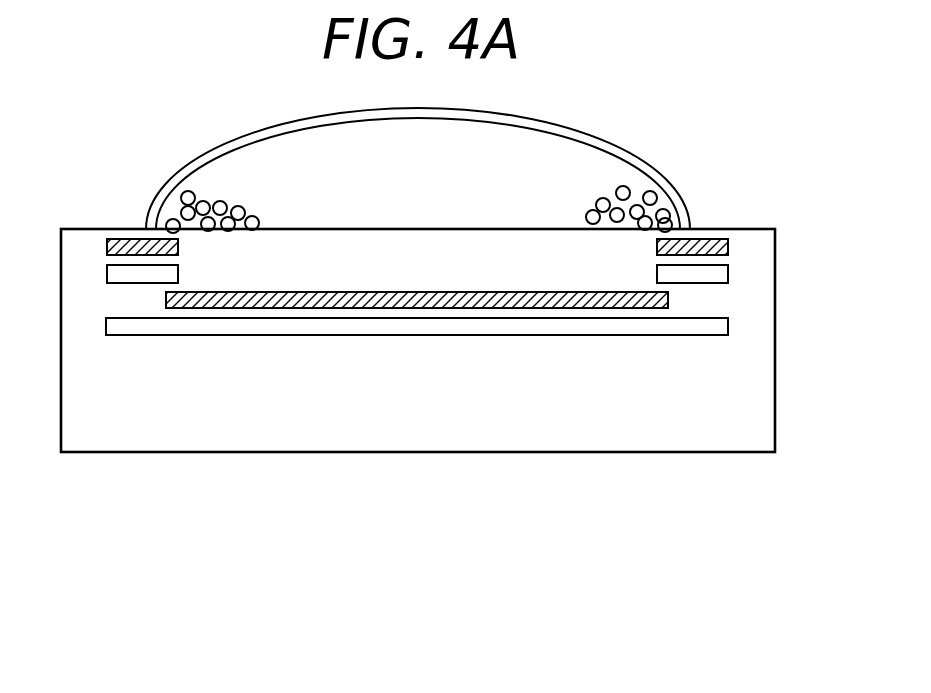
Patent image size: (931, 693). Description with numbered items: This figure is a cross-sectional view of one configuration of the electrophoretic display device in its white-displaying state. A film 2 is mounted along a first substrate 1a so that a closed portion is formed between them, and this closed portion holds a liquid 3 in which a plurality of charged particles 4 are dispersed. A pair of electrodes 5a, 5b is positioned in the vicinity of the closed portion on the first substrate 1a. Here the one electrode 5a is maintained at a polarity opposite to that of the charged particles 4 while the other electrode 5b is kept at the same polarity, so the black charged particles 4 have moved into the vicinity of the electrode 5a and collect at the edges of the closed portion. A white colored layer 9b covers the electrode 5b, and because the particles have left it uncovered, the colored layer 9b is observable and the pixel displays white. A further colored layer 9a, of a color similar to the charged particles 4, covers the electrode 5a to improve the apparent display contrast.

The first substrate 1a is at (740, 388).
The film 2 is at (607, 141).
The liquid 3 is at (430, 179).
The charged particles 4 is at (218, 200).
The colored layer 9a is at (724, 244).
The electrode 5a is at (708, 274).
The colored layer 9b is at (668, 300).
The electrode 5b is at (708, 327).